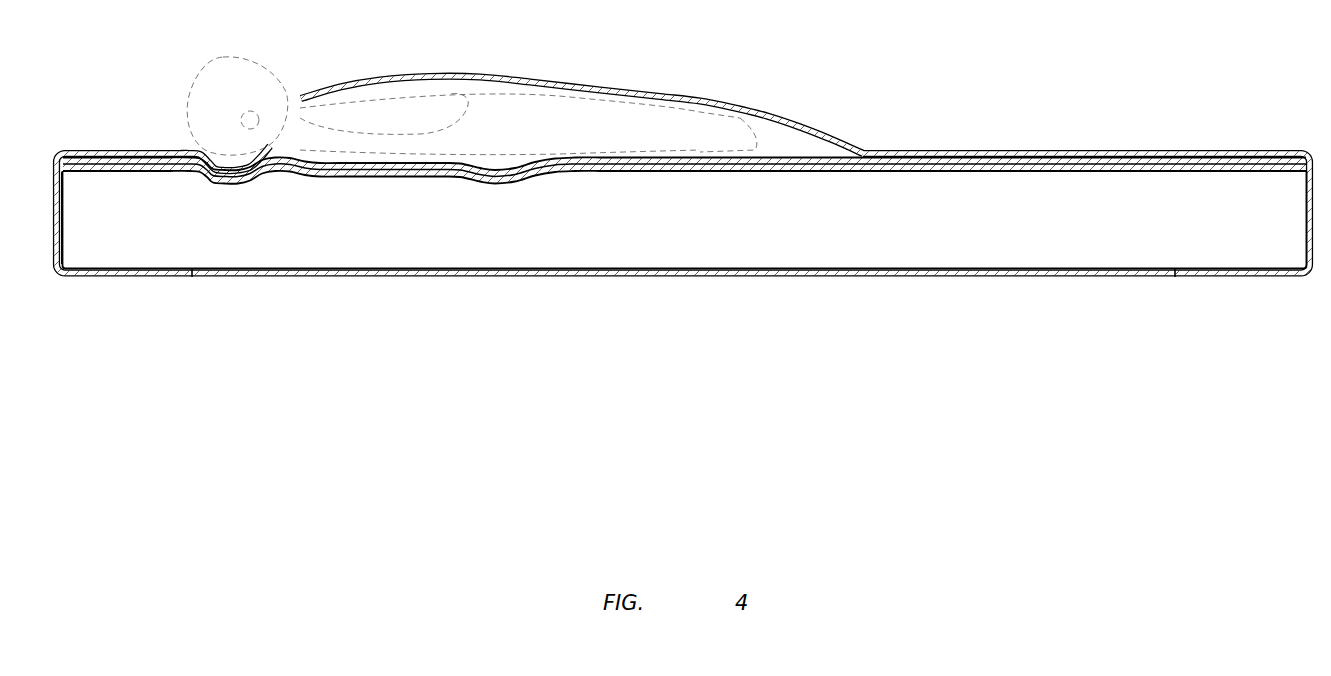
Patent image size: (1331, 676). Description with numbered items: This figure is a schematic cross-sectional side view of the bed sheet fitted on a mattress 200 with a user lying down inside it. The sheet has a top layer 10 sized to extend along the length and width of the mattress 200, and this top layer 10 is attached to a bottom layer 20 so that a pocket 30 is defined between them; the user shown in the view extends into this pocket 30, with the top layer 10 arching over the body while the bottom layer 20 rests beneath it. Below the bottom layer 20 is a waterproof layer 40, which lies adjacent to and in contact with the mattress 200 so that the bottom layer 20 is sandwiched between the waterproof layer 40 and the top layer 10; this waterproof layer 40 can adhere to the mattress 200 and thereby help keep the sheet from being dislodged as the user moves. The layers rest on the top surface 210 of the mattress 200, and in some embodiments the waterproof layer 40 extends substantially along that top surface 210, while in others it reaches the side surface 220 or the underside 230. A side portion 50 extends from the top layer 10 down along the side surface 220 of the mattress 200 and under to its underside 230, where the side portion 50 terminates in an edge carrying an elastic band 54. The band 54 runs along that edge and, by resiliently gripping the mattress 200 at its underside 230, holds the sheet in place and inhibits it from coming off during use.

The top layer 10 is at (563, 85).
The bottom layer 20 is at (828, 158).
The pocket 30 is at (762, 134).
The waterproof layer 40 is at (1182, 170).
The side portion 50 is at (55, 209).
The elastic band 54 is at (935, 270).
The mattress 200 is at (685, 209).
The top surface 210 is at (1122, 155).
The side surface 220 is at (718, 230).
The underside 230 is at (418, 275).